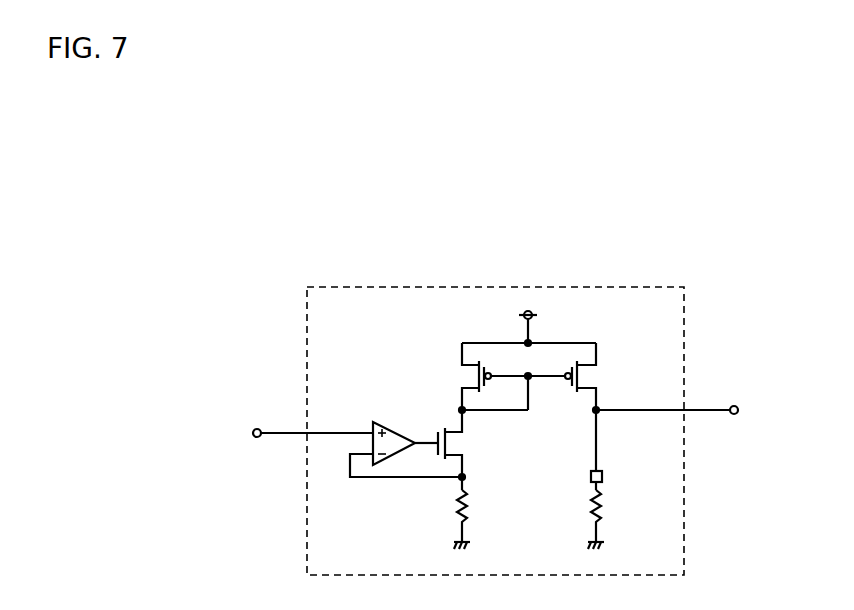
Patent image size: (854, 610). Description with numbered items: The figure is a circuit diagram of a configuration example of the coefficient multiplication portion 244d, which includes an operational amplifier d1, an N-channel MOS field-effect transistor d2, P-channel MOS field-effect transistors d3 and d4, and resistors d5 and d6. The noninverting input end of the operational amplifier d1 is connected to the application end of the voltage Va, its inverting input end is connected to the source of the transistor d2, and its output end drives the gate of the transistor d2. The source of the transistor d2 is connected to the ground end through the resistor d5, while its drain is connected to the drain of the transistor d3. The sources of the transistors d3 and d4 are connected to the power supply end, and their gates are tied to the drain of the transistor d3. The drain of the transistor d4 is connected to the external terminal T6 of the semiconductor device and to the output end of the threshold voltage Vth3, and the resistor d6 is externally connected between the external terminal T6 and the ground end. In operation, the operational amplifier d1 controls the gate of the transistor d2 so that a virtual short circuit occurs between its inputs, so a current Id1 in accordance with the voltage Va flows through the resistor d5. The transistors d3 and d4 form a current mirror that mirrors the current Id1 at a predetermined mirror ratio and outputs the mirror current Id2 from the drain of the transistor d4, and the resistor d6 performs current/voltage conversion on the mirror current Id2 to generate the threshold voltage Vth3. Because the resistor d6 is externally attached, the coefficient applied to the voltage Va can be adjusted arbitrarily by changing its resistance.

The coefficient multiplication portion 244d is at (496, 288).
The operational amplifier d1 is at (400, 428).
The N-channel type MOS field-effect transistor d2 is at (471, 450).
The P-channel type MOS field-effect transistor d3 is at (458, 376).
The P-channel type MOS field-effect transistor d4 is at (601, 376).
The resistor d5 is at (482, 519).
The resistor d6 is at (615, 519).
The external terminal T6 is at (615, 450).
The voltage Va is at (298, 433).
The threshold voltage Vth3 is at (689, 410).
The current Id1 is at (432, 512).
The mirror current Id2 is at (566, 512).